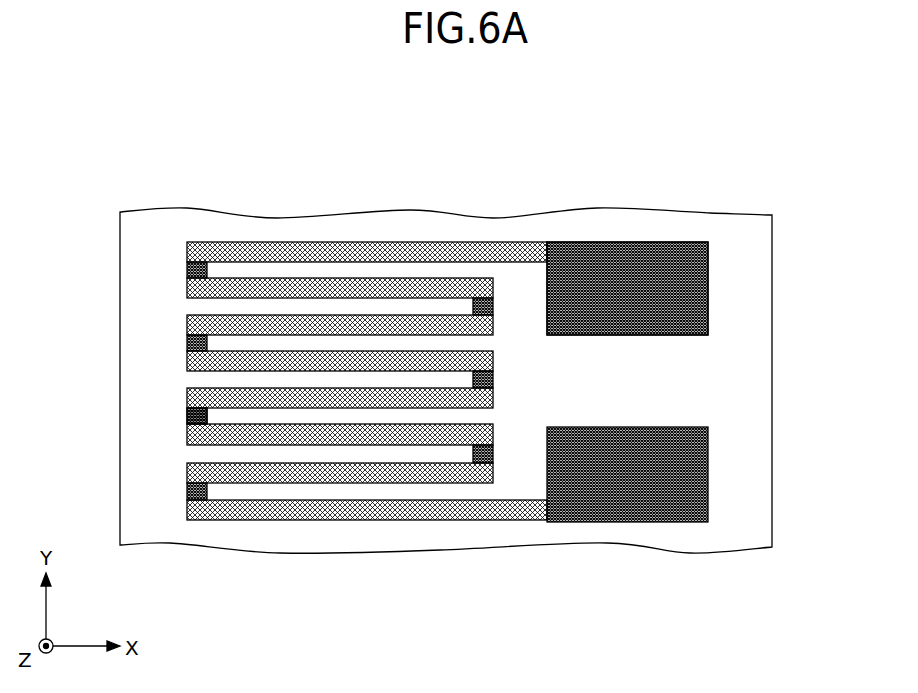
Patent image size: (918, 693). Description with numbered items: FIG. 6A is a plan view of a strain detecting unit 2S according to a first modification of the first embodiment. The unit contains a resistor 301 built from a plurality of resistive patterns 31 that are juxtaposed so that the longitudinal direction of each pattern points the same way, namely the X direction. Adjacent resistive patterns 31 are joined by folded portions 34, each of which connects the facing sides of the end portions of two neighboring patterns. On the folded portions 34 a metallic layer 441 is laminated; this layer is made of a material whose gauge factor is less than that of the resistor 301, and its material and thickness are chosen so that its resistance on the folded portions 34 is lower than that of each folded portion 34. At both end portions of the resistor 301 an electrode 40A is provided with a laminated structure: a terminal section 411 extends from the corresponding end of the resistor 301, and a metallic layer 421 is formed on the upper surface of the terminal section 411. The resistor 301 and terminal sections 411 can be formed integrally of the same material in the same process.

The strain detecting unit 2S is at (52, 144).
The resistor 301 is at (277, 381).
The resistive pattern 31 is at (188, 318).
The folded portion 34 is at (187, 343).
The metallic layer 441 is at (187, 411).
The electrode 40A is at (627, 318).
The metallic layer 421 is at (603, 280).
The terminal section 411 is at (578, 156).